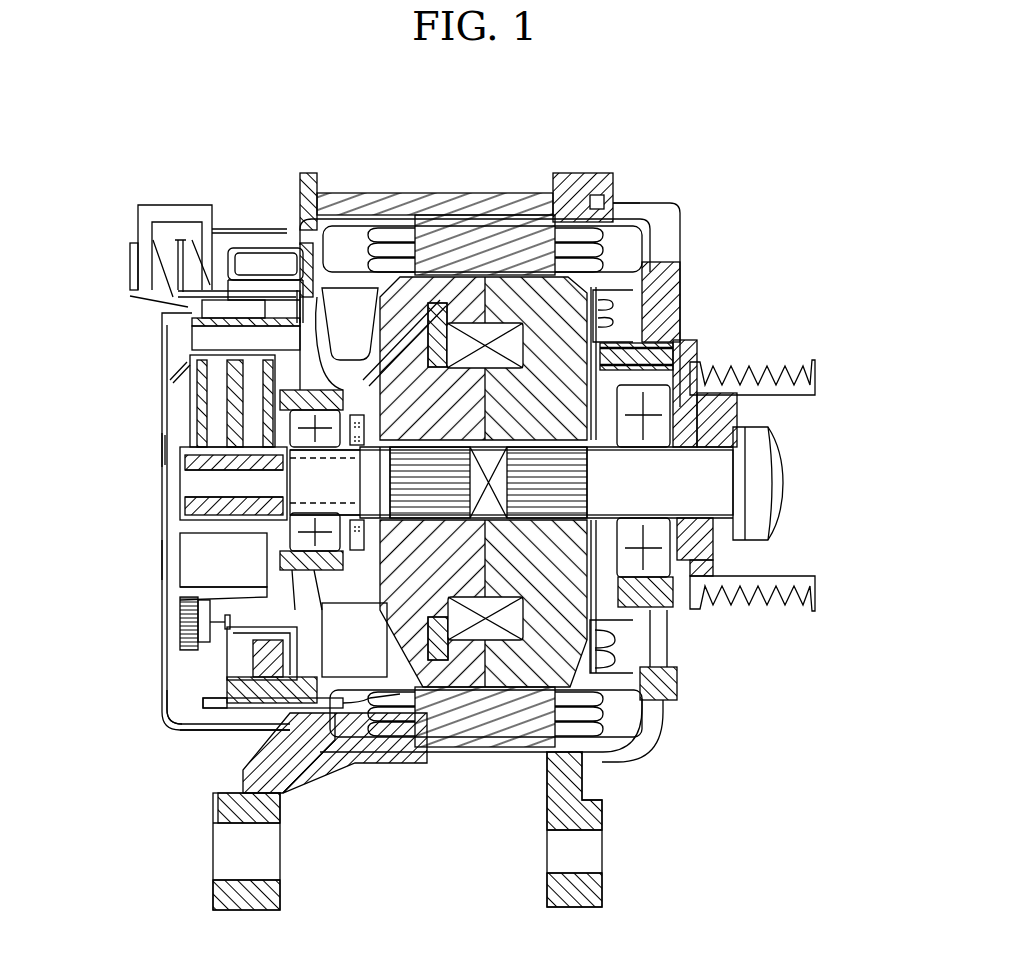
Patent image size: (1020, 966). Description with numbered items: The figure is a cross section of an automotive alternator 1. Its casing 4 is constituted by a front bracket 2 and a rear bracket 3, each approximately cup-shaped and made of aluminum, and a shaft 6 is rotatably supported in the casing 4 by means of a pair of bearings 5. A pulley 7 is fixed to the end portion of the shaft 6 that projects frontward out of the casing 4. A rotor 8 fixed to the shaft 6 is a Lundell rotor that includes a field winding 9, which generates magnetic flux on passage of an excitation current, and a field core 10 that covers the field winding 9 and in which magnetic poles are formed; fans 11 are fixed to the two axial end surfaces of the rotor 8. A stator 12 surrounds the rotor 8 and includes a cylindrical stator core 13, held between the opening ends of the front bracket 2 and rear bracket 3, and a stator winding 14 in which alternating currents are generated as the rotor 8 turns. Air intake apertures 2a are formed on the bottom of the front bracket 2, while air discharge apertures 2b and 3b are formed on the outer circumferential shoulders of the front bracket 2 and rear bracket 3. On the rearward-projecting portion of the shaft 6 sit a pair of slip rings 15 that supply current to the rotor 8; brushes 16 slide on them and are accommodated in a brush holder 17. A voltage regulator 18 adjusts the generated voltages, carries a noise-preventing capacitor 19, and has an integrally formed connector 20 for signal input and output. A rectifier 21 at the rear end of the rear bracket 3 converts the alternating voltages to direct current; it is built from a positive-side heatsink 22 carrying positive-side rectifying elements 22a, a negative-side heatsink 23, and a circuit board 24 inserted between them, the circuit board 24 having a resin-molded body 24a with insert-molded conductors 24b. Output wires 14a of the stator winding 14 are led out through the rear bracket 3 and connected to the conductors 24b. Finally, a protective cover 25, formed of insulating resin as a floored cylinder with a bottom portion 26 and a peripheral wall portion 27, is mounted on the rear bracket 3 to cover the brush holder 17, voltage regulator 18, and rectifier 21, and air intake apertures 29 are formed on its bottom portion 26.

The automotive alternator 1 is at (159, 87).
The front bracket 2 is at (667, 471).
The air intake apertures 2a is at (655, 640).
The air discharge apertures 2b is at (650, 728).
The rear bracket 3 is at (329, 531).
The air discharge apertures 3b is at (370, 757).
The casing 4 is at (687, 205).
The bearings 5 is at (663, 397).
The shaft 6 is at (718, 485).
The pulley 7 is at (760, 367).
The rotor 8 is at (511, 395).
The field winding 9 is at (470, 333).
The field core 10 is at (503, 285).
The fans 11 is at (627, 313).
The stator 12 is at (485, 520).
The stator core 13 is at (480, 718).
The stator winding 14 is at (570, 723).
The output wires 14a is at (343, 717).
The slip rings 15 is at (230, 477).
The brushes 16 is at (203, 430).
The brush holder 17 is at (187, 370).
The voltage regulator 18 is at (217, 310).
The noise-preventing capacitor 19 is at (245, 255).
The connector 20 is at (175, 228).
The rectifier 21 is at (177, 643).
The positive-side heatsink 22 is at (175, 591).
The positive-side rectifying elements 22a is at (203, 620).
The negative-side heatsink 23 is at (230, 663).
The circuit board 24 is at (230, 713).
The resin-molded body 24a is at (258, 693).
The conductors 24b is at (217, 695).
The protective cover 25 is at (158, 452).
The bottom portion 26 is at (158, 705).
The peripheral wall portion 27 is at (193, 733).
The air intake apertures 29 is at (160, 558).